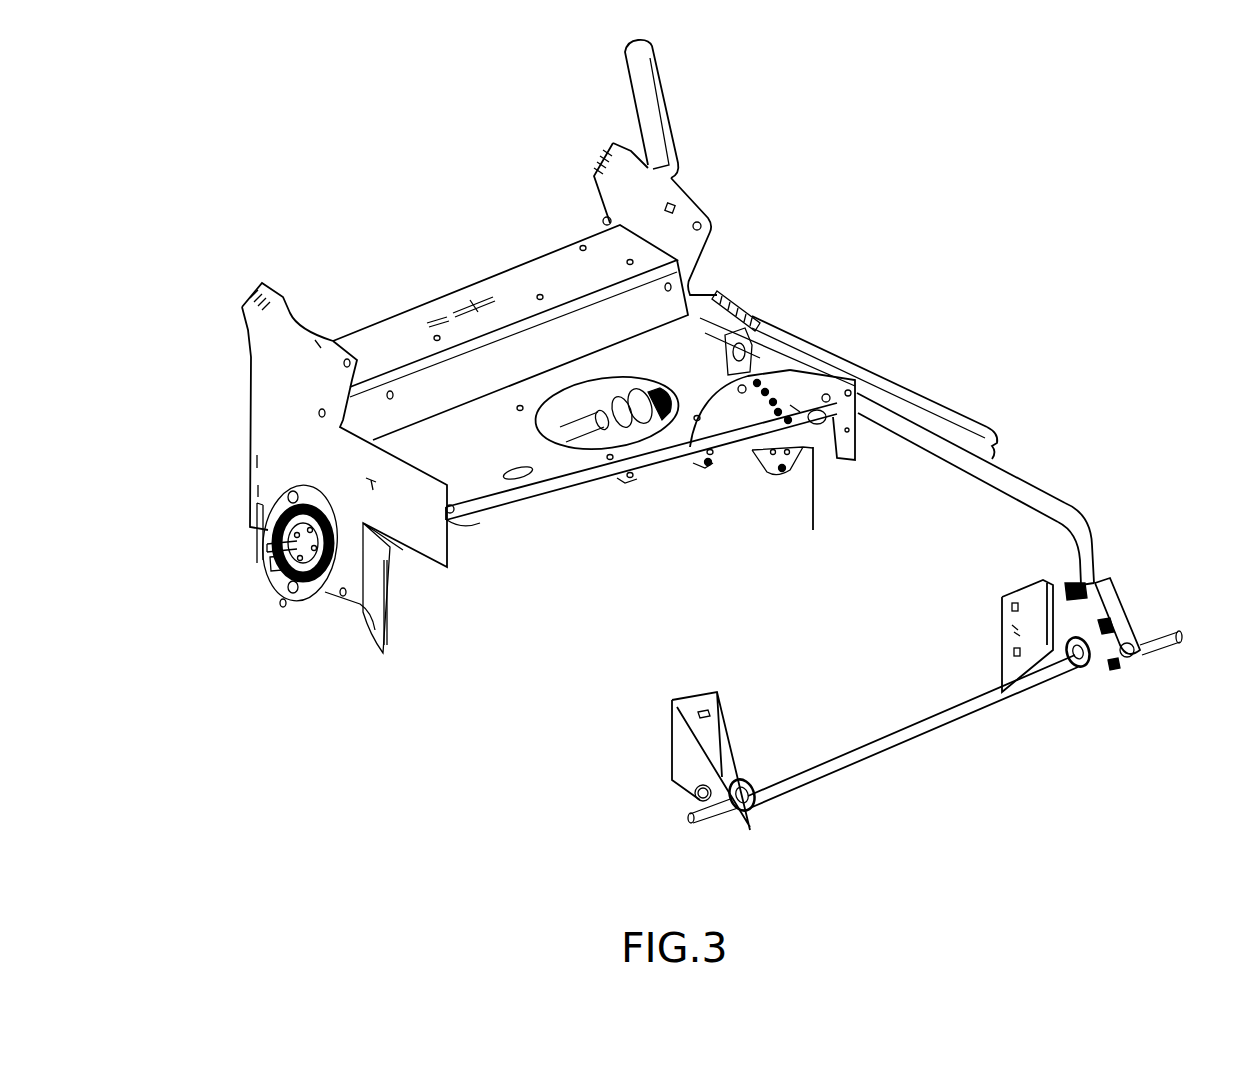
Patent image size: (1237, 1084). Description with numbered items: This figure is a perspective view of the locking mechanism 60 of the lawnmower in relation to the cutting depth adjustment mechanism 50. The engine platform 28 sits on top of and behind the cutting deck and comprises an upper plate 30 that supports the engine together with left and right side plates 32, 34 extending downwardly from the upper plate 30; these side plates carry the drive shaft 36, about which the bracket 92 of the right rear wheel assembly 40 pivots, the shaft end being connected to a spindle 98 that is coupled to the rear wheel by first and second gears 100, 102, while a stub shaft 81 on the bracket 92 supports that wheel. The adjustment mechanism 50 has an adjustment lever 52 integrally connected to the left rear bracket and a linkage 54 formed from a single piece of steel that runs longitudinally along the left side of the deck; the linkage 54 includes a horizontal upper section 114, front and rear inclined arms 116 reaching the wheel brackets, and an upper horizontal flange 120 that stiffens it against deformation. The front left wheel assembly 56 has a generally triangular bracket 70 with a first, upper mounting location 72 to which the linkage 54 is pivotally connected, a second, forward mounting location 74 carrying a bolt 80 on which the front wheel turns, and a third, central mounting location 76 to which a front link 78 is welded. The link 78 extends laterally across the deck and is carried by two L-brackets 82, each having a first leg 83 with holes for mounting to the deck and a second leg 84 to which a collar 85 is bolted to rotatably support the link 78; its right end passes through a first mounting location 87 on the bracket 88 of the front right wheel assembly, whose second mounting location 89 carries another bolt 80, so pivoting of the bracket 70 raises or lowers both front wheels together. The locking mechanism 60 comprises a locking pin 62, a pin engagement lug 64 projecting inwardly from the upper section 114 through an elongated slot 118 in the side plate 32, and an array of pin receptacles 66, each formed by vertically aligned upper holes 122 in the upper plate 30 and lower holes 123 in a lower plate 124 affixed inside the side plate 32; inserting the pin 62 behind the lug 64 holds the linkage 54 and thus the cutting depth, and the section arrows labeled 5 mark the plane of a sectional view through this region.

The section line 5 is at (747, 320).
The platform 28 is at (553, 509).
The upper plate 30 is at (505, 283).
The left side plate 32 is at (693, 243).
The right side plate 34 is at (273, 415).
The drive shaft 36 is at (590, 433).
The right rear wheel assembly 40 is at (288, 604).
The cutting depth adjustment mechanism 50 is at (916, 409).
The adjustment lever 52 is at (652, 123).
The linkage 54 is at (1007, 499).
The front left wheel assembly 56 is at (1108, 587).
The locking mechanism 60 is at (777, 403).
The locking pin 62 is at (766, 345).
The pin engagement mechanism 64 is at (770, 350).
The pin receptacles 66 is at (782, 415).
The bracket 70 is at (1110, 660).
The first mounting location 72 is at (1067, 583).
The second mounting location 74 is at (1140, 657).
The third mounting location 76 is at (1100, 623).
The front link 78 is at (905, 718).
The bolt 80 is at (718, 815).
The stub shaft 81 is at (270, 567).
The L-bracket 82 is at (727, 697).
The first leg 83 is at (720, 730).
The second leg 84 is at (687, 750).
The collar 85 is at (1078, 667).
The first mounting location 87 is at (700, 793).
The bracket 88 is at (703, 773).
The second mounting location 89 is at (755, 817).
The bracket 92 is at (280, 580).
The spindle 98 is at (268, 556).
The first gear 100 is at (262, 537).
The second gear 102 is at (323, 587).
The upper section 114 is at (1033, 497).
The inclined arms 116 is at (1067, 530).
The elongated slot 118 is at (792, 382).
The upper horizontal flange 120 is at (989, 435).
The upper holes 122 is at (826, 392).
The lower holes 123 is at (787, 470).
The lower plate 124 is at (817, 472).